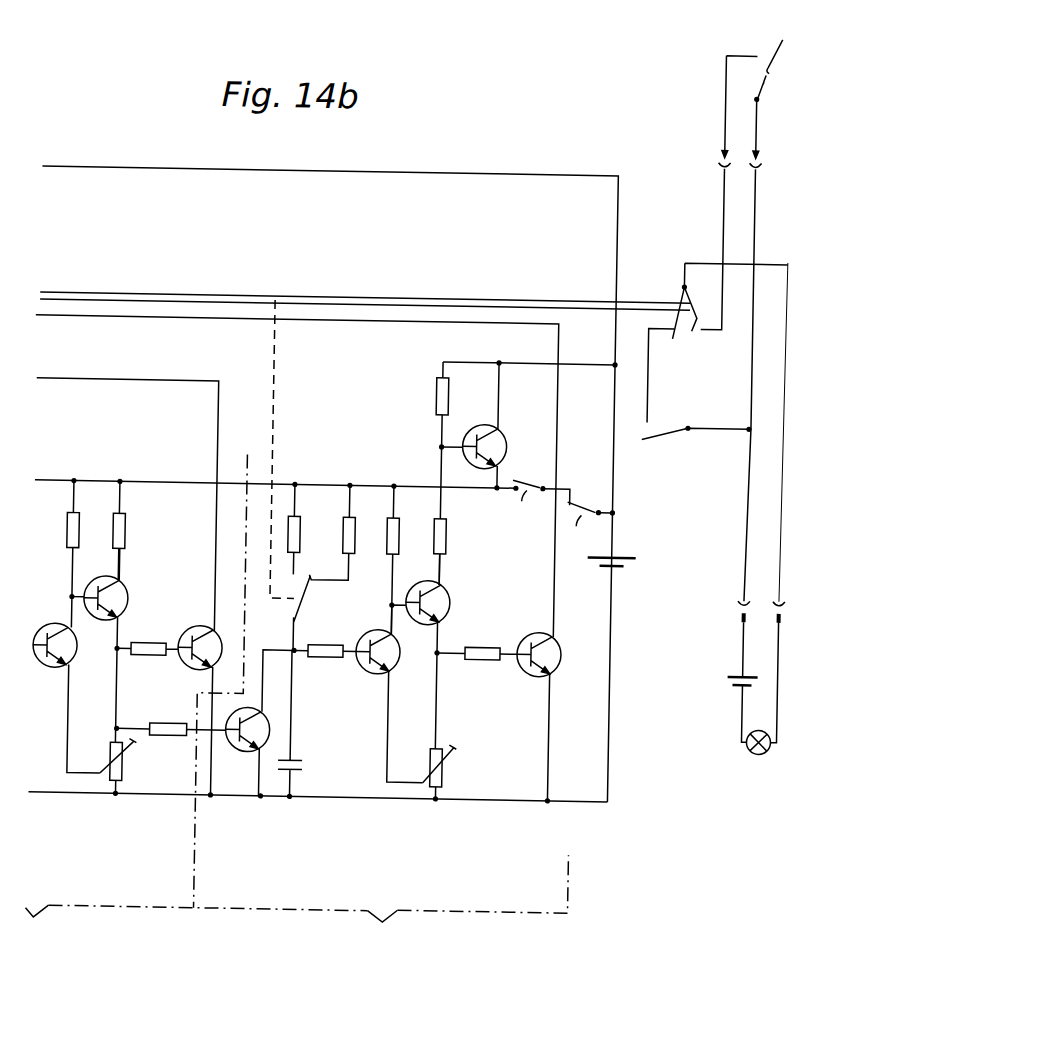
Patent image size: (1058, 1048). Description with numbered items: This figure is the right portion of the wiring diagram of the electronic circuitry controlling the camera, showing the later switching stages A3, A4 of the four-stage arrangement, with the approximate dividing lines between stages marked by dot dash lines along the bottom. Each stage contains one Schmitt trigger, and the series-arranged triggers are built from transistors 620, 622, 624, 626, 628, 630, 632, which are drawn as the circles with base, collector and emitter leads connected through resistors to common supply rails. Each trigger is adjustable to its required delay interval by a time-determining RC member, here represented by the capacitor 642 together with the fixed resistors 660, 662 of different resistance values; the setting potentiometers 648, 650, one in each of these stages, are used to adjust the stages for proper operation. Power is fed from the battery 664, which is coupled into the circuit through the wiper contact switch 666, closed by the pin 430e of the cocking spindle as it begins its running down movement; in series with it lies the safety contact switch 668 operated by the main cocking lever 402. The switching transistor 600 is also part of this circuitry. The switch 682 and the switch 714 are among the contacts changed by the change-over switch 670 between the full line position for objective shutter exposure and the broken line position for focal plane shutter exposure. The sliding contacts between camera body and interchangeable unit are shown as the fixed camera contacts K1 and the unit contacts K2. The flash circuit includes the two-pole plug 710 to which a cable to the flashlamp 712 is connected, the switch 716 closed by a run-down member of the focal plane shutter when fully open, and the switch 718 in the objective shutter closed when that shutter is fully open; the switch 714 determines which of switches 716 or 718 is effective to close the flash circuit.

The change-over switch 670 is at (94, 298).
The switching transistor 600 is at (472, 418).
The pin of the cocking spindle 430e is at (527, 474).
The main cocking lever 402 is at (582, 498).
The wiper contact switch 666 is at (538, 498).
The safety contact switch 668 is at (587, 523).
The battery 664 is at (622, 551).
The fixed resistor 660 is at (301, 531).
The fixed resistor 662 is at (353, 530).
The switch 682 is at (312, 595).
The transistor 620 is at (45, 671).
The transistor 622 is at (129, 583).
The transistor 624 is at (182, 663).
The transistor 626 is at (243, 757).
The transistor 628 is at (357, 668).
The transistor 630 is at (449, 591).
The transistor 632 is at (558, 636).
The capacitor 642 is at (305, 764).
The setting potentiometer 648 is at (129, 774).
The setting potentiometer 650 is at (450, 780).
The switch 718 is at (779, 55).
The fixed contacts on the camera body K1 is at (714, 159).
The contacts on the interchangeable unit K2 is at (714, 143).
The switch 714 is at (683, 329).
The switch 716 is at (672, 428).
The two-pole plug 710 is at (779, 590).
The flashlamp 712 is at (760, 750).
The switching stage A3 is at (41, 939).
The switching stage A4 is at (380, 950).